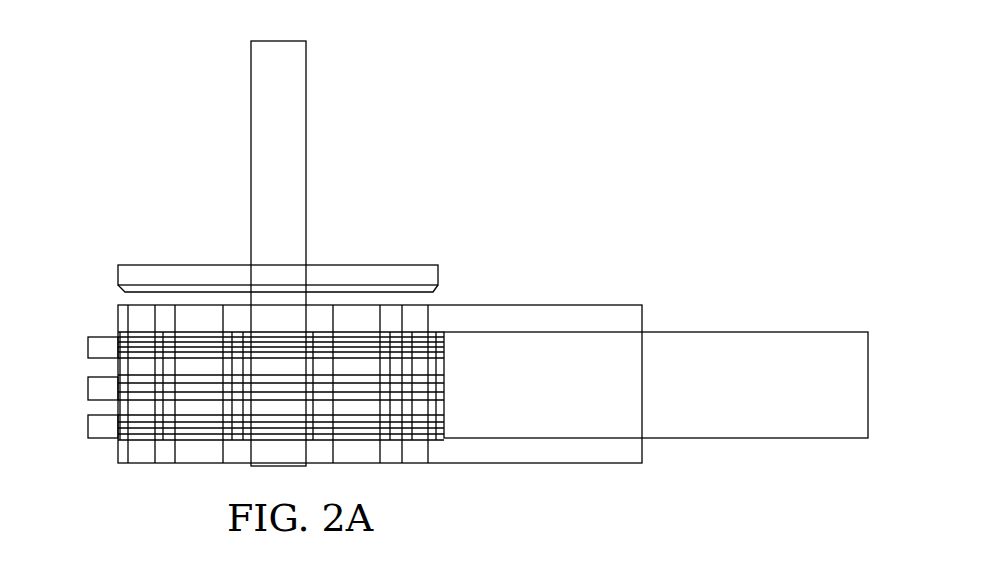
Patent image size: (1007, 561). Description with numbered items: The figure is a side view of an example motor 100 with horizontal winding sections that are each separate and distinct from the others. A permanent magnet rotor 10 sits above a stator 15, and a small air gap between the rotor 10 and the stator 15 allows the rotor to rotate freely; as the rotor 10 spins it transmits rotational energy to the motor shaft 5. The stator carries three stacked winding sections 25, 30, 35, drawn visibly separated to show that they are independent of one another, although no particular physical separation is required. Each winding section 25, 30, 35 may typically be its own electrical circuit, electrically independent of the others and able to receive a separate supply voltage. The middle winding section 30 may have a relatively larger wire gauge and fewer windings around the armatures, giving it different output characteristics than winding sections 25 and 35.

The motor shaft 5 is at (279, 143).
The permanent magnet rotor 10 is at (418, 278).
The stator 15 is at (467, 315).
The winding section 25 is at (88, 427).
The winding section 30 is at (88, 388).
The winding section 35 is at (88, 347).
The motor 100 is at (477, 130).